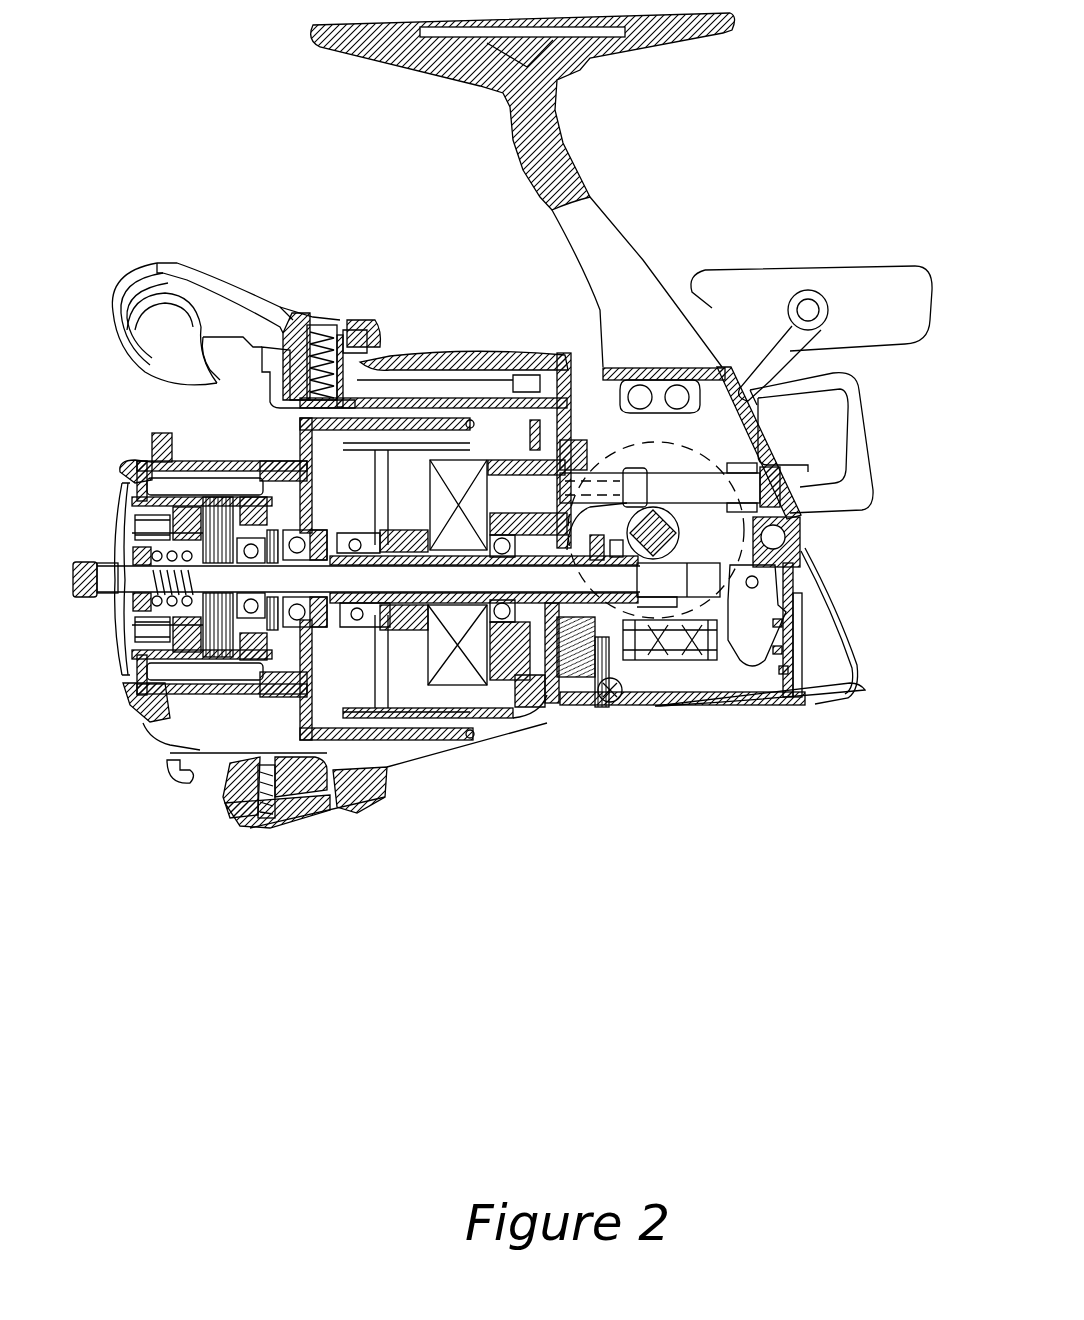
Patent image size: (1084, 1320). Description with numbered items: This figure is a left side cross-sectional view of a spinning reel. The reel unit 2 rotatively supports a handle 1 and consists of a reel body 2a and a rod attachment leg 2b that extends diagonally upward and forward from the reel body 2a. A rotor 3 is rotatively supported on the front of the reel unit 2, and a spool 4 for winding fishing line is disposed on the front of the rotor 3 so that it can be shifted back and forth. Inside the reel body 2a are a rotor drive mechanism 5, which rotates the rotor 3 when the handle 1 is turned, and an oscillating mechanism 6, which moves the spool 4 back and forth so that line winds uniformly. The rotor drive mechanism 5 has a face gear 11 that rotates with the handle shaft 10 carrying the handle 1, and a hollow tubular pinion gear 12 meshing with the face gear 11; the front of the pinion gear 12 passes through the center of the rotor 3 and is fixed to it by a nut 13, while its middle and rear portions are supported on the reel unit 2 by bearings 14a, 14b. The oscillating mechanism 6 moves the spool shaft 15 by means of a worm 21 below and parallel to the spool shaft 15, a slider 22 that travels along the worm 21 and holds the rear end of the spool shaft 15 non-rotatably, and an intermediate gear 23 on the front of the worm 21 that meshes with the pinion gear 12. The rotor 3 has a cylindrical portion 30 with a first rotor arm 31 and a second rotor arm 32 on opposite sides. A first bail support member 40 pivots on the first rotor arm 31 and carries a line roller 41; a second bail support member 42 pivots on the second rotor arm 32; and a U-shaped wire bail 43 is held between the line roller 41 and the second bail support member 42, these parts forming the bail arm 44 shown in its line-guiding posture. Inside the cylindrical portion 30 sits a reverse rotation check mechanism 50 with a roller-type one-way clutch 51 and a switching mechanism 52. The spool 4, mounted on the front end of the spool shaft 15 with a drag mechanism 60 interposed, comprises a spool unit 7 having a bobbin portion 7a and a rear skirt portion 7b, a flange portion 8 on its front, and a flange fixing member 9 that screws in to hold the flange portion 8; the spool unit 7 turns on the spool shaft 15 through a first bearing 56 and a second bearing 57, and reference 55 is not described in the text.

The handle 1 is at (772, 330).
The reel unit 2 is at (843, 585).
The reel body 2a is at (803, 527).
The rod attachment leg 2b is at (610, 240).
The rotor 3 is at (433, 715).
The spool 4 is at (221, 590).
The rotor drive mechanism 5 is at (692, 520).
The oscillating mechanism 6 is at (678, 702).
The spool unit 7 is at (278, 858).
The bobbin portion 7a is at (213, 790).
The skirt portion 7b is at (333, 760).
The flange portion 8 is at (147, 738).
The flange fixing member 9 is at (127, 700).
The handle shaft 10 is at (643, 507).
The face gear 11 is at (690, 665).
The pinion gear 12 is at (553, 705).
The nut 13 is at (380, 530).
The bearing 14a is at (503, 530).
The bearing 14b is at (620, 710).
The spool shaft 15 is at (740, 657).
The worm 21 is at (688, 700).
The slider 22 is at (807, 670).
The intermediate gear 23 is at (573, 700).
The cylindrical portion 30 is at (433, 718).
The first rotor arm 31 is at (366, 347).
The second rotor arm 32 is at (375, 795).
The first bail support member 40 is at (250, 307).
The line roller 41 is at (117, 282).
The second bail support member 42 is at (210, 790).
The bail 43 is at (233, 413).
The bail arm 44 is at (172, 390).
The reverse rotation check mechanism 50 is at (470, 380).
The one-way clutch 51 is at (502, 380).
The switching mechanism 52 is at (663, 458).
The drag mechanism 55 is at (215, 428).
The first bearing 56 is at (210, 497).
The second bearing 57 is at (255, 500).
The drag mechanism 60 is at (177, 777).